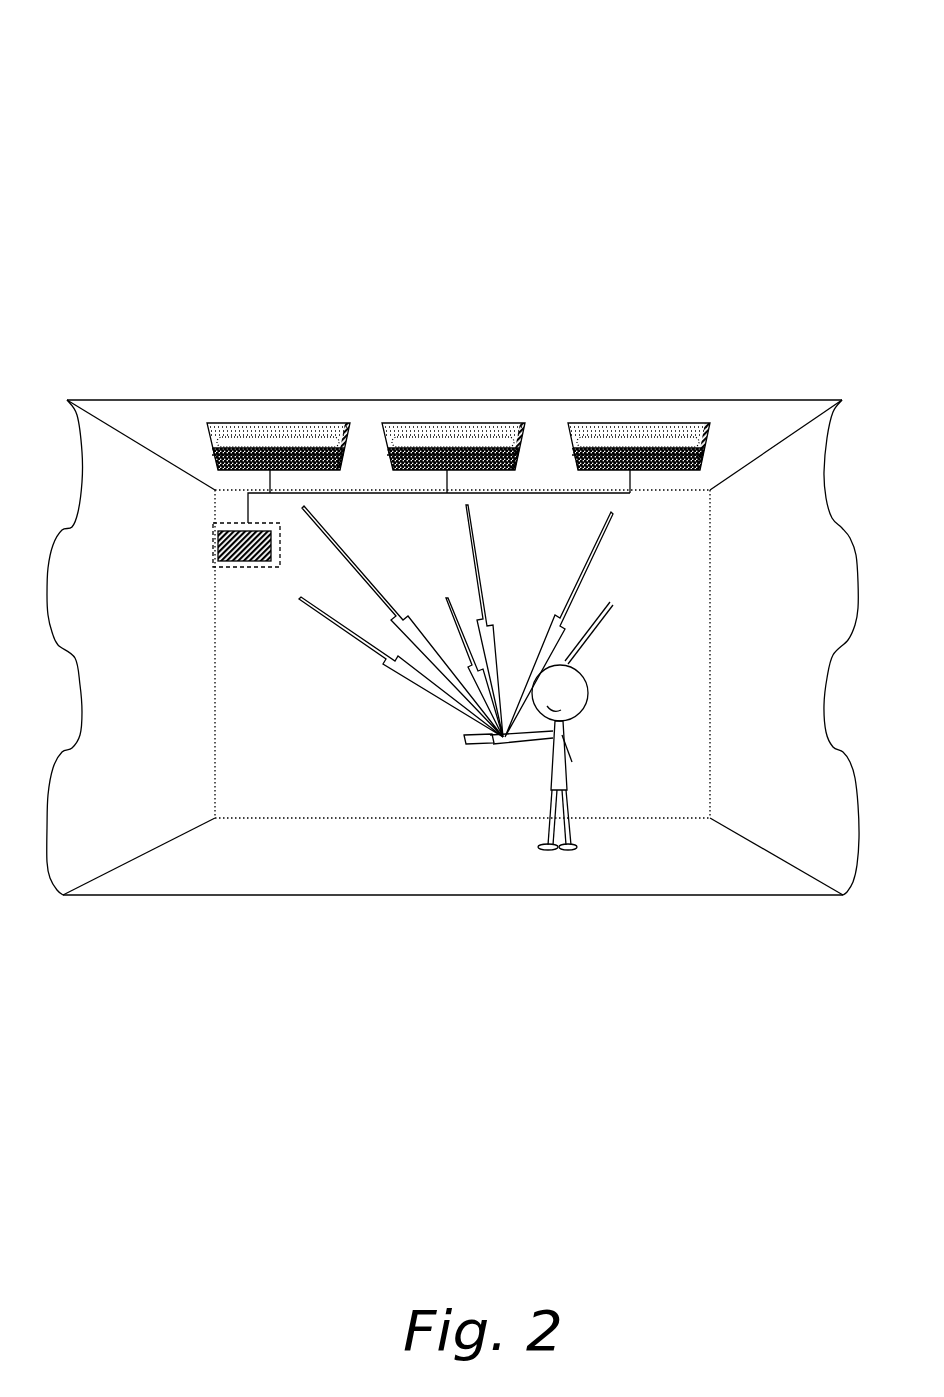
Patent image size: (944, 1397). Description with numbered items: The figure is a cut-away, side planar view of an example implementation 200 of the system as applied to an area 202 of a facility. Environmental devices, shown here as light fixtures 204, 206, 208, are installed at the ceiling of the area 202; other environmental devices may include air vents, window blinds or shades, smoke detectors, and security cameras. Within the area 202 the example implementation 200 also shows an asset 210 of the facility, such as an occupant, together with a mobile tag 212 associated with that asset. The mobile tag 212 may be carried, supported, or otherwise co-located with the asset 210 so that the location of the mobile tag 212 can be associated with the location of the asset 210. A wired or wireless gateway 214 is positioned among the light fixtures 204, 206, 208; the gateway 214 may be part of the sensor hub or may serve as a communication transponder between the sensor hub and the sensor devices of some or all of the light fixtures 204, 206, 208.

The example implementation 200 is at (94, 27).
The area 202 is at (306, 746).
The light fixture 204 is at (260, 414).
The light fixture 206 is at (435, 414).
The light fixture 208 is at (620, 414).
The asset 210 is at (588, 757).
The mobile tag 212 is at (456, 646).
The wired or wireless gateway 214 is at (363, 542).